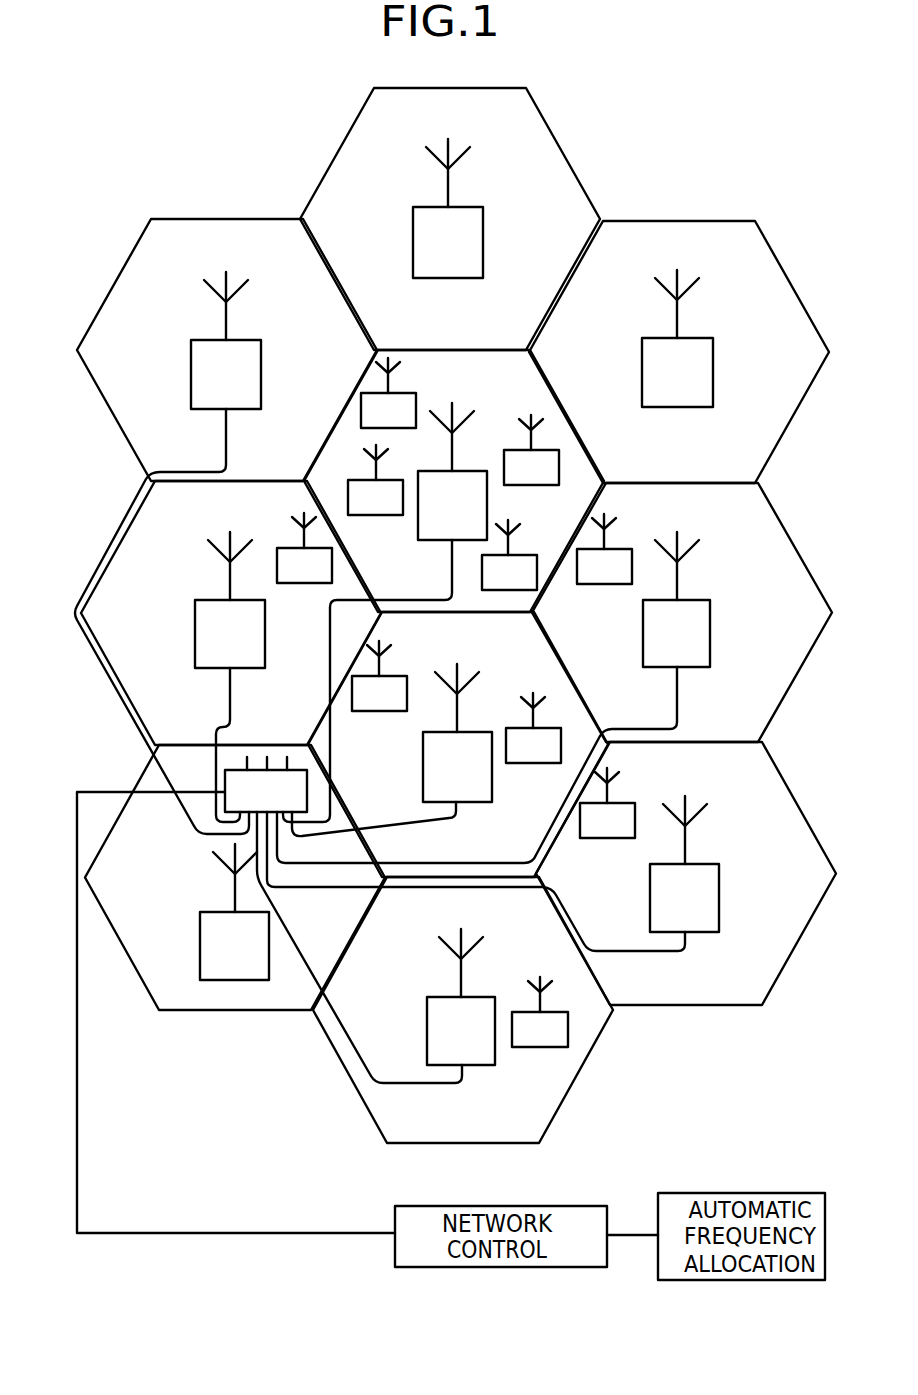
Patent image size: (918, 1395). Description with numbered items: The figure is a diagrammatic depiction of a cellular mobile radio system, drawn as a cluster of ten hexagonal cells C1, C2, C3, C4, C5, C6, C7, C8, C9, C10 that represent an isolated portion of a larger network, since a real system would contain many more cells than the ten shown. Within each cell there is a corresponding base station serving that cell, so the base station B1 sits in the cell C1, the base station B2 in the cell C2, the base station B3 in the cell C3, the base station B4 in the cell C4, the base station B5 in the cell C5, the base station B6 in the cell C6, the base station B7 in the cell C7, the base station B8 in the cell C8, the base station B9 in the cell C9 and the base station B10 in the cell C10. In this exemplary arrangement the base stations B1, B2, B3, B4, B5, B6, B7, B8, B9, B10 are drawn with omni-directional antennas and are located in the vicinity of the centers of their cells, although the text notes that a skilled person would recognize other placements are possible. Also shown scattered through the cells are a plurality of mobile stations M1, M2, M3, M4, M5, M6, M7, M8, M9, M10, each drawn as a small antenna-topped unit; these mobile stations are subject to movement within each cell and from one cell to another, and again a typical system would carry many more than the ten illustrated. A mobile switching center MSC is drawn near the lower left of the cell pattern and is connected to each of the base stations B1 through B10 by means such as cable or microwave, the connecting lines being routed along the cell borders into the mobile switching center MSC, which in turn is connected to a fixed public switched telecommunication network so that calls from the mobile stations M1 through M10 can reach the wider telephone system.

The cell C1 is at (406, 595).
The cell C2 is at (633, 467).
The cell C3 is at (633, 725).
The cell C4 is at (410, 858).
The cell C5 is at (185, 732).
The cell C6 is at (180, 467).
The cell C7 is at (405, 335).
The cell C8 is at (640, 985).
The cell C9 is at (418, 1127).
The cell C10 is at (195, 998).
The base station B1 is at (385, 612).
The base station B2 is at (677, 338).
The base station B3 is at (493, 697).
The base station B4 is at (392, 750).
The base station B5 is at (230, 677).
The base station B6 is at (168, 553).
The base station B7 is at (448, 208).
The base station B8 is at (493, 873).
The base station B9 is at (376, 947).
The base station B10 is at (234, 912).
The mobile station M1 is at (607, 803).
The mobile station M2 is at (304, 548).
The mobile station M3 is at (375, 480).
The mobile station M4 is at (531, 450).
The mobile station M5 is at (604, 549).
The mobile station M6 is at (388, 393).
The mobile station M7 is at (509, 555).
The mobile station M8 is at (533, 728).
The mobile station M9 is at (379, 676).
The mobile station M10 is at (540, 1012).
The mobile switching center MSC is at (266, 784).